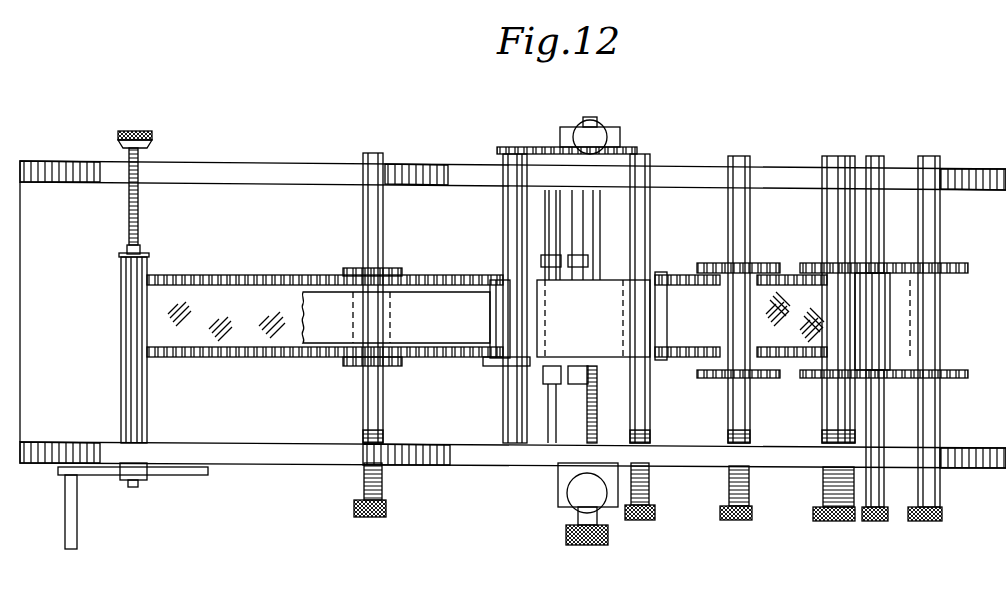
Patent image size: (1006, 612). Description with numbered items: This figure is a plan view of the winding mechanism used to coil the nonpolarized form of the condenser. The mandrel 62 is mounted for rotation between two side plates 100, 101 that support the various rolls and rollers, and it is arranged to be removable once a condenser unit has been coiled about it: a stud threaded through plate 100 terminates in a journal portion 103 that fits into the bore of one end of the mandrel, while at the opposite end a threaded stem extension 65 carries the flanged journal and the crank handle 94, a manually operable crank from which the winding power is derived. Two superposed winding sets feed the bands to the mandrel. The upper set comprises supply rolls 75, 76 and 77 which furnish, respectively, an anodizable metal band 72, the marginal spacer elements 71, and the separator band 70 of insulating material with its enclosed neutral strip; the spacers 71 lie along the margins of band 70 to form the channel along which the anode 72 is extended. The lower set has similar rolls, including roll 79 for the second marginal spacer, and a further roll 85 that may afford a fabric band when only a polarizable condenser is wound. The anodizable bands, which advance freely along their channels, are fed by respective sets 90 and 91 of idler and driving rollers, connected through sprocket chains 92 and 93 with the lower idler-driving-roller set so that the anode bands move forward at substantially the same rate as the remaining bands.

The side plate 100 is at (266, 174).
The side plate 101 is at (289, 455).
The journal portion 103 is at (139, 253).
The mandrel 62 is at (138, 414).
The threaded stem extension 65 is at (134, 480).
The crank handle 94 is at (74, 527).
The marginal spacer elements 71 is at (218, 279).
The band of insulating material 70 is at (271, 338).
The anodizable metal band 72 is at (331, 332).
The set of idler and driving rollers 90 is at (508, 300).
The set of idler and driving rollers 91 is at (492, 364).
The sprocket chain 92 is at (523, 150).
The sprocket chain 93 is at (621, 150).
The supply roll 75 is at (665, 273).
The supply roll 77 is at (707, 268).
The supply roll 76 is at (848, 296).
The roll 85 is at (955, 268).
The supply roll 79 is at (878, 340).